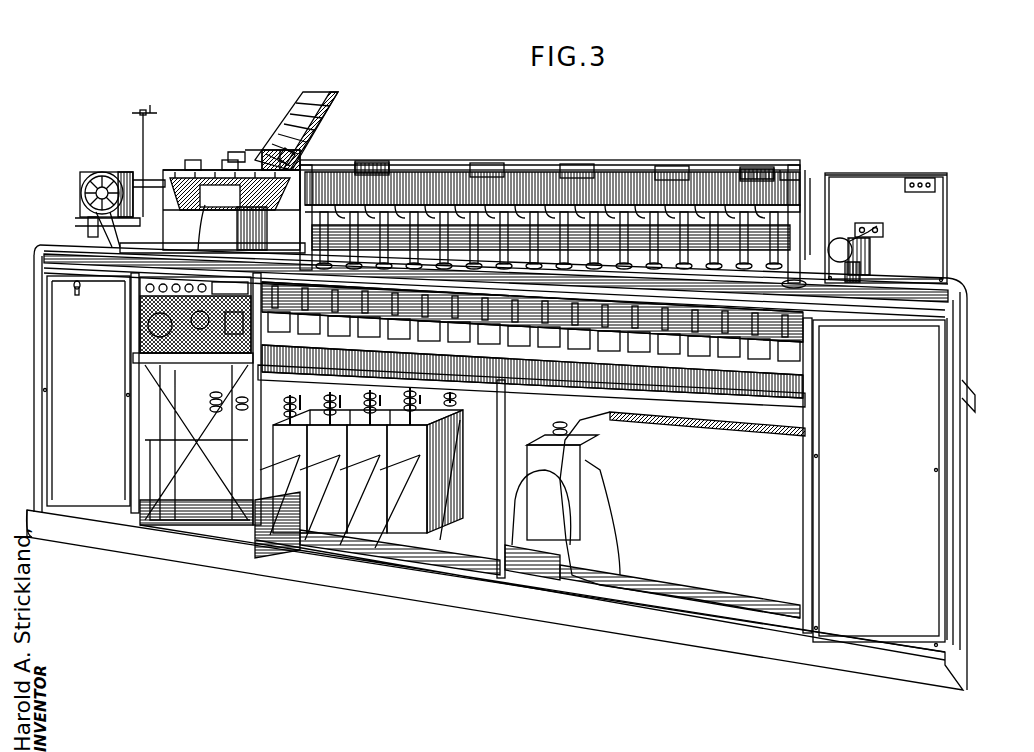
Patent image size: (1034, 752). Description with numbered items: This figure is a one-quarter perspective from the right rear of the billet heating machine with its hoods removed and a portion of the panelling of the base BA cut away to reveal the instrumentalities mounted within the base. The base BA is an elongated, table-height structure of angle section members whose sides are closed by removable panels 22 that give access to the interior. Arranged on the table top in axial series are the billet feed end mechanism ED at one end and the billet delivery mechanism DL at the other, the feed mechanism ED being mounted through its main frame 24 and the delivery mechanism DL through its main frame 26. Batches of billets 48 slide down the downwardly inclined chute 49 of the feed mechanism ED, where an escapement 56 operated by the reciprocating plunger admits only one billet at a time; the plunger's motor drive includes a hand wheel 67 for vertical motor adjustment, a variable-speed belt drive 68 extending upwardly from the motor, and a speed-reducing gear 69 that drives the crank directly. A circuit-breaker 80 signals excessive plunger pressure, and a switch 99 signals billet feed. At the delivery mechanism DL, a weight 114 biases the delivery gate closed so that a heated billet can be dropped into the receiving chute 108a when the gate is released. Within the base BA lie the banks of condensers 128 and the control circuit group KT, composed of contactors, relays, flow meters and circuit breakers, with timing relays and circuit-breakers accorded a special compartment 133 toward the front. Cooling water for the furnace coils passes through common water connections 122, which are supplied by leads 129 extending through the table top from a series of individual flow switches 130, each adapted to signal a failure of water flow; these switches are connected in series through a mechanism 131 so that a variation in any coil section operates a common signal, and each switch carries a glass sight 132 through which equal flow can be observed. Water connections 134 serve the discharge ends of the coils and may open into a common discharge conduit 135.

The base BA is at (44, 250).
The removable panels 22 is at (910, 457).
The receiving chute 108a is at (972, 392).
The special compartment 133 is at (145, 310).
The control circuit group KT is at (770, 333).
The glass sights 132 is at (600, 330).
The flow switches 130 is at (376, 326).
The mechanism 131 is at (662, 360).
The banks of condensers 128 is at (545, 466).
The billet feed end mechanism ED is at (203, 158).
The main frame 24 is at (212, 206).
The circuit-breaker 80 is at (200, 222).
The speed-reducing gear 69 is at (84, 184).
The variable-speed belt drive 68 is at (88, 226).
The hand wheel 67 is at (142, 118).
The escapement 56 is at (262, 150).
The billets 48 is at (318, 100).
The chute 49 is at (330, 110).
The switch signalling billet feed 99 is at (293, 150).
The common discharge conduit 135 is at (692, 178).
The water connections 134 is at (757, 167).
The common water connections 122 is at (402, 246).
The leads 129 is at (778, 250).
The billet delivery mechanism DL is at (912, 173).
The main frame 26 is at (886, 228).
The weight 114 is at (852, 255).